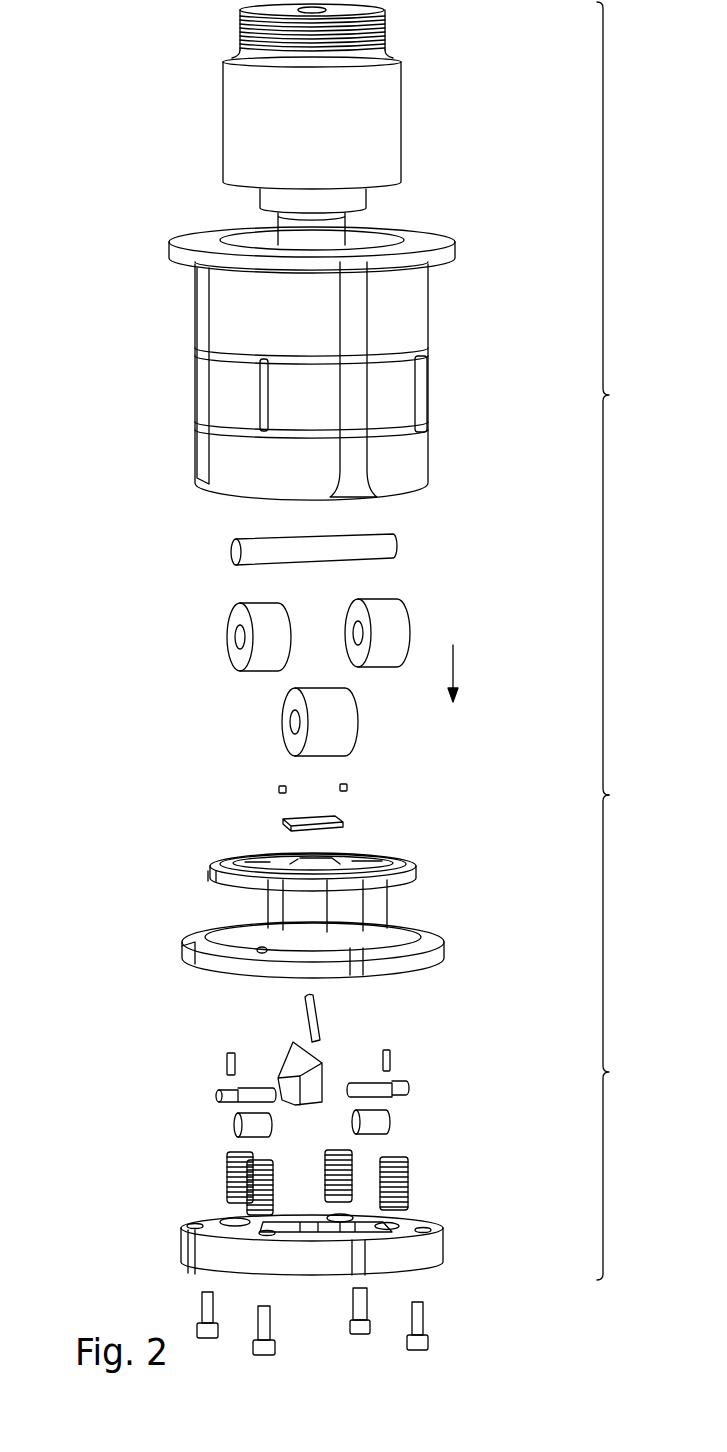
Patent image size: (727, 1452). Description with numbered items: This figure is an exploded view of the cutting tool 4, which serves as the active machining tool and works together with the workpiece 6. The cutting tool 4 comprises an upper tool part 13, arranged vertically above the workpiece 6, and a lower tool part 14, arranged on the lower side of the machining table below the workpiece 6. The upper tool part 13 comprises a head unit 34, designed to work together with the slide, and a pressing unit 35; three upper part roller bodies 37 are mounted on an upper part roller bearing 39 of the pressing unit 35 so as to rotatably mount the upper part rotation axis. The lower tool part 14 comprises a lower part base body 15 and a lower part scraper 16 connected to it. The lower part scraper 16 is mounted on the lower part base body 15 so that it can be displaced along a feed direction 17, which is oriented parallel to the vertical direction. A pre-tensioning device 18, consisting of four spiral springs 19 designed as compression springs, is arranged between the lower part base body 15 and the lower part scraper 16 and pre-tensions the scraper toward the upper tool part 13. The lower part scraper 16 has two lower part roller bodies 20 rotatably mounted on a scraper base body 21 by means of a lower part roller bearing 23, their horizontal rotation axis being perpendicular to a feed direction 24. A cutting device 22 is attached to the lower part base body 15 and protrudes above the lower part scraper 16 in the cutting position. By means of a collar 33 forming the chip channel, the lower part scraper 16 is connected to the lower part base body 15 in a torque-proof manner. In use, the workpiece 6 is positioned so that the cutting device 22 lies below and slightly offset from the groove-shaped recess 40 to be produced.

The cutting tool 4 is at (627, 795).
The workpiece 6 is at (290, 818).
The upper tool part 13 is at (624, 398).
The lower tool part 14 is at (624, 1037).
The lower part base body 15 is at (452, 1243).
The lower part scraper 16 is at (438, 903).
The feed direction 17 is at (453, 668).
The pre-tensioning device 18 is at (422, 1187).
The spiral springs 19 is at (350, 1150).
The lower part roller bodies 20 is at (353, 1115).
The scraper base body 21 is at (222, 880).
The cutting device 22 is at (307, 1022).
The lower part roller bearing 23 is at (218, 1092).
The feed direction 24 is at (334, 834).
The collar 33 is at (373, 913).
The head unit 34 is at (388, 135).
The pressing unit 35 is at (415, 327).
The upper part roller bodies 37 is at (292, 722).
The upper part roller bearing 39 is at (236, 552).
The groove-shaped recess 40 is at (345, 833).